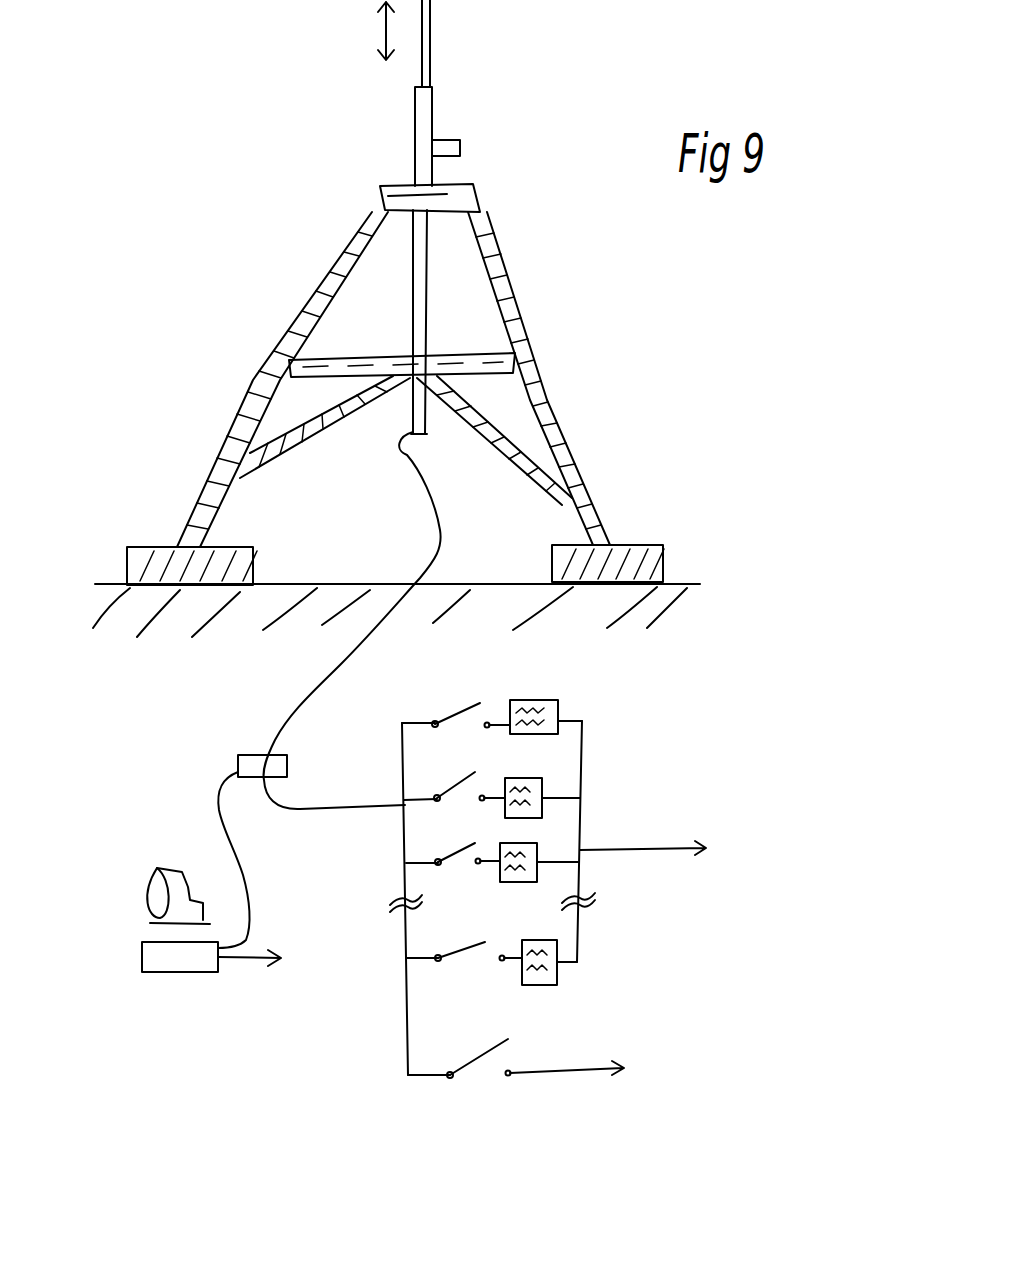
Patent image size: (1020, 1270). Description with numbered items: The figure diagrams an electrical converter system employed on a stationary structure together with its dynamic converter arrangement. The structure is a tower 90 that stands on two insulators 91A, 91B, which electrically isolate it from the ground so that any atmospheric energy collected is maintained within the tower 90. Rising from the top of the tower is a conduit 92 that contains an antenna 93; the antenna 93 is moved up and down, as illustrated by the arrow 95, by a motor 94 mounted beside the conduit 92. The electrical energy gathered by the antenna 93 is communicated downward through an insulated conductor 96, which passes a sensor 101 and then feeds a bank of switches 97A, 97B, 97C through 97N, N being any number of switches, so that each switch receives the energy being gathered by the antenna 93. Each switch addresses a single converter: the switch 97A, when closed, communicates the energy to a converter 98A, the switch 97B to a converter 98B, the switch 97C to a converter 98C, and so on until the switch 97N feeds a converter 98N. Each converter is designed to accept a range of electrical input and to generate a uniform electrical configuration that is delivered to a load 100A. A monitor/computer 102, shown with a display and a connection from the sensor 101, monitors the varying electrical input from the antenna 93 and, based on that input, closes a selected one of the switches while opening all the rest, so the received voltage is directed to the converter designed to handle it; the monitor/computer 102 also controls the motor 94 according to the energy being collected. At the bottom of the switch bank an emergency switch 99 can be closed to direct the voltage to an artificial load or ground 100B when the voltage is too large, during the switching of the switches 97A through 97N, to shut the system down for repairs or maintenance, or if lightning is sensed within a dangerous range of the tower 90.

The tower 90 is at (537, 322).
The insulator 91A is at (135, 541).
The insulator 91B is at (660, 520).
The conduit 92 is at (418, 115).
The antenna 93 is at (440, 62).
The motor 94 is at (474, 152).
The arrow 95 is at (373, 34).
The insulated conductor 96 is at (430, 507).
The switch 97A is at (459, 695).
The switch 97B is at (448, 777).
The switch 97C is at (448, 846).
The switch 97N is at (452, 943).
The converter 98A is at (560, 697).
The converter 98B is at (550, 780).
The converter 98C is at (543, 846).
The converter 98N is at (565, 980).
The emergency switch 99 is at (460, 1098).
The load 100A is at (720, 825).
The artificial load or ground 100B is at (687, 1063).
The sensor 101 is at (229, 732).
The monitor/computer 102 is at (130, 918).